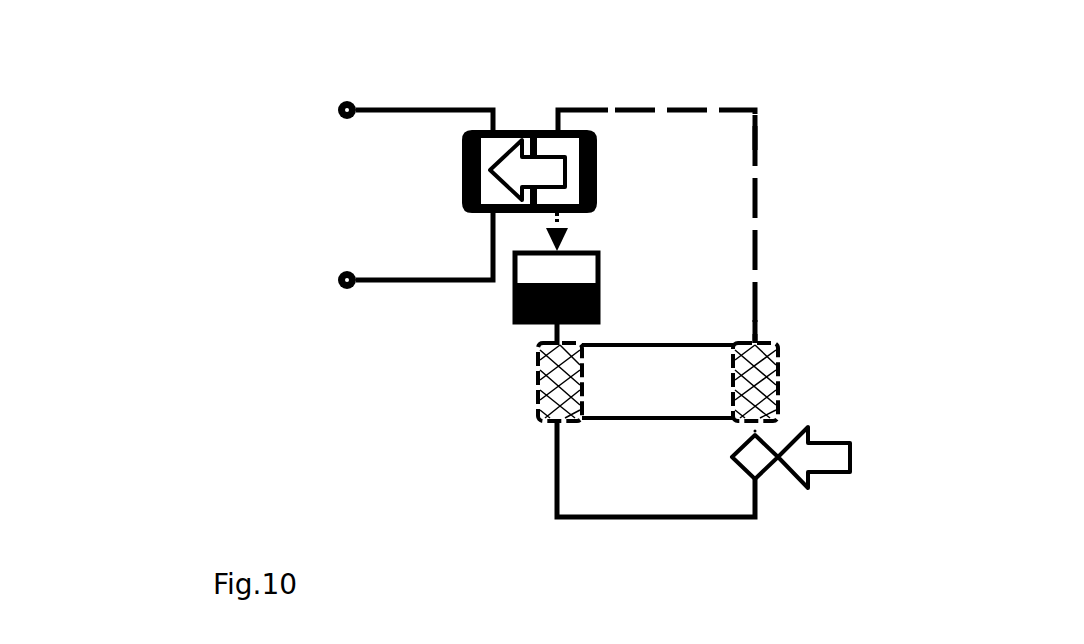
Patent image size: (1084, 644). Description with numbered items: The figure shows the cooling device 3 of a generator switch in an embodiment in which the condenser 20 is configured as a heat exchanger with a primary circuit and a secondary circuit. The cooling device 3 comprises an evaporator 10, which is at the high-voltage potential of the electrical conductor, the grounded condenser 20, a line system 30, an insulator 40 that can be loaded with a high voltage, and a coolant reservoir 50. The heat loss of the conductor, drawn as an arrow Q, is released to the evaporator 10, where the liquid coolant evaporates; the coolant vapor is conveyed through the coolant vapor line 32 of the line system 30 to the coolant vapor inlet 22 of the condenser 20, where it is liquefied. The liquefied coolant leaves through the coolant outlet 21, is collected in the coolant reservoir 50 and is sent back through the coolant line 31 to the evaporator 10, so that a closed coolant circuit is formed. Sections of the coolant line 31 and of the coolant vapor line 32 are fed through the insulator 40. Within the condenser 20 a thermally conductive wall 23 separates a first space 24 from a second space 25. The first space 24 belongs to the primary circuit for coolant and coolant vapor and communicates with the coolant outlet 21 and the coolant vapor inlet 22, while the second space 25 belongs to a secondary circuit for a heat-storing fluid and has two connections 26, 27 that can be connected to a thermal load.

The cooling device 3 is at (848, 178).
The evaporator 10 is at (760, 460).
The condenser 20 is at (132, 168).
The coolant outlet 21 is at (572, 237).
The coolant vapor inlet 22 is at (560, 132).
The thermally conductive wall 23 is at (535, 160).
The first space 24 is at (572, 150).
The second space 25 is at (490, 153).
The connection 26 is at (336, 110).
The connection 27 is at (336, 280).
The line system 30 is at (732, 282).
The coolant line 31 is at (553, 468).
The coolant vapor line 32 is at (757, 160).
The insulator 40 is at (661, 392).
The coolant reservoir 50 is at (535, 276).